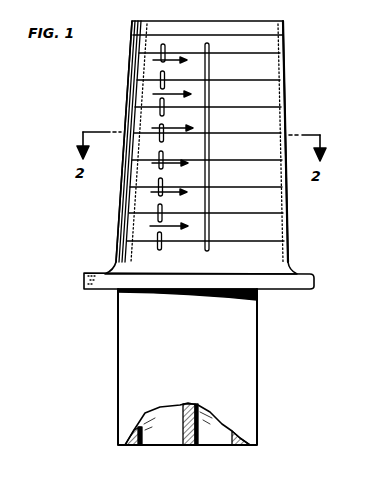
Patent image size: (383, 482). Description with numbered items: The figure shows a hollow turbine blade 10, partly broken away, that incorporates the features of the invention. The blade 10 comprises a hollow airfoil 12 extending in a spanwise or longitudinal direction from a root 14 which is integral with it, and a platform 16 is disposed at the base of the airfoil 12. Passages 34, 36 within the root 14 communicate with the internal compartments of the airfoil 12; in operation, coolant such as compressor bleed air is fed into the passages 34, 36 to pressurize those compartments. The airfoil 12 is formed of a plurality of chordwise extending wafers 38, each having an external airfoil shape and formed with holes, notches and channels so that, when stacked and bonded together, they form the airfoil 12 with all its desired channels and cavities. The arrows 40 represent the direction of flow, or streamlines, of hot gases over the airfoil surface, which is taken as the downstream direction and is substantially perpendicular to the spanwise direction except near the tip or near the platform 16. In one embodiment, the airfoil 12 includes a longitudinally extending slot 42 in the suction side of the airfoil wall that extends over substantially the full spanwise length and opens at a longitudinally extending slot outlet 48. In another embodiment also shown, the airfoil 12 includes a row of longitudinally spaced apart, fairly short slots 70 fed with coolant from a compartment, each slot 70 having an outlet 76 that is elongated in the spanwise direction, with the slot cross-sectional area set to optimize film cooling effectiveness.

The turbine blade 10 is at (297, 23).
The hollow airfoil 12 is at (272, 202).
The root 14 is at (197, 321).
The platform 16 is at (84, 281).
The passage 34 is at (156, 437).
The passage 36 is at (210, 437).
The cordwise extending wafers 38 is at (268, 72).
The arrows 40 is at (166, 62).
The longitudinally extending slot 42 is at (209, 97).
The slot outlet 48 is at (209, 68).
The slots 70 is at (162, 206).
The outlets 76 is at (164, 116).